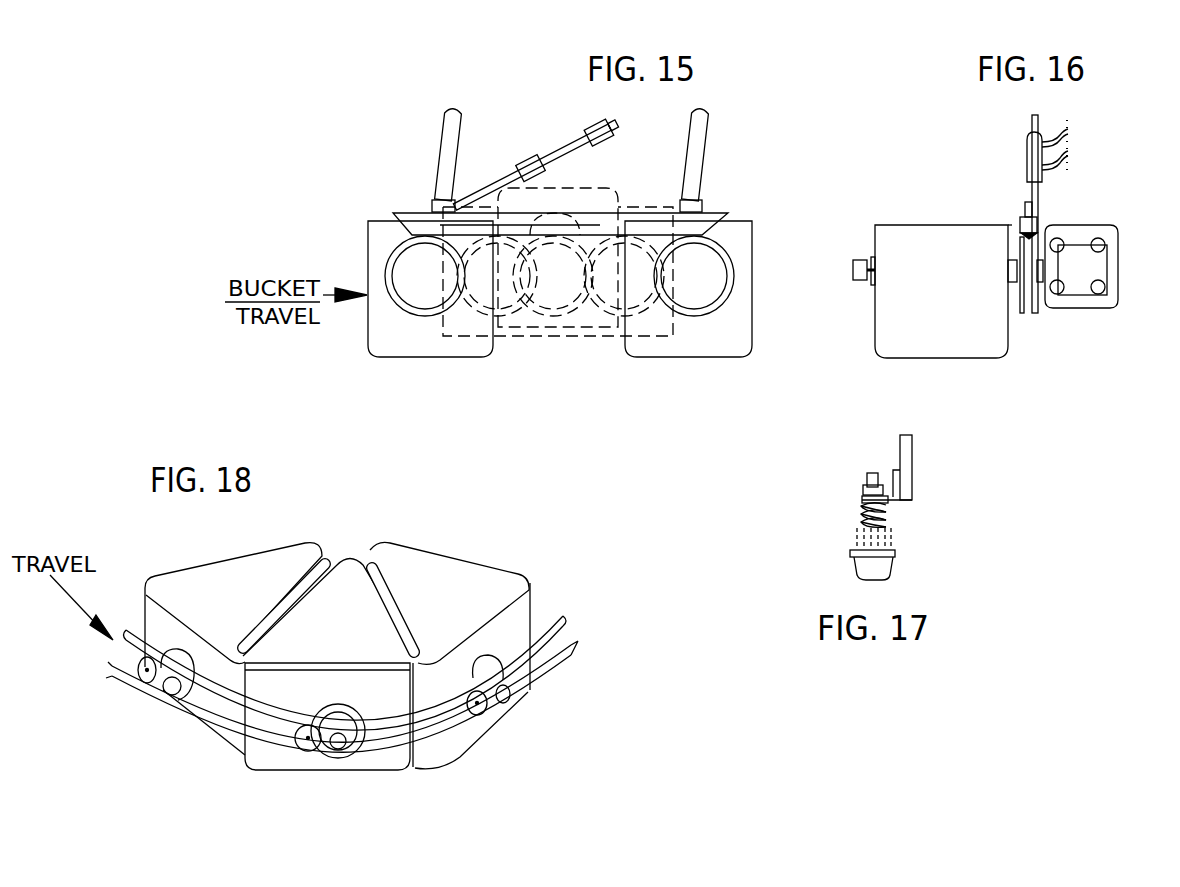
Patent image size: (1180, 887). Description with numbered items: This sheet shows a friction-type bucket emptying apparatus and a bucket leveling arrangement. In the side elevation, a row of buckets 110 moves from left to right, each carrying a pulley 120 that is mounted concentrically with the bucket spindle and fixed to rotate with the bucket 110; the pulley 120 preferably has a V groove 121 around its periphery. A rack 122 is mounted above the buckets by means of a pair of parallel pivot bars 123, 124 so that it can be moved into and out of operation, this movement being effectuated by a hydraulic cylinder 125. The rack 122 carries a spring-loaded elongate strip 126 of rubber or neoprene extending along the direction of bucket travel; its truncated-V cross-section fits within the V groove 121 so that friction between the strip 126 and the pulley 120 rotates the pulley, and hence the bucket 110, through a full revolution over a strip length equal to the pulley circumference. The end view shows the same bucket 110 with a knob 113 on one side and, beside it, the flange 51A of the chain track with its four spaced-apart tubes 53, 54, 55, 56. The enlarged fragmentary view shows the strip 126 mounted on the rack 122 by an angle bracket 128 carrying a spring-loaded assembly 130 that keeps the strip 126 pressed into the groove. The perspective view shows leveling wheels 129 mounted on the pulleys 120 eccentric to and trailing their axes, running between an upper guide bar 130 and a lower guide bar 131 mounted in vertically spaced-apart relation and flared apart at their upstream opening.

In FIG. 15, the bucket 110 is at (392, 345).
In FIG. 16, the bucket 110 is at (895, 232).
In FIG. 18, the bucket 110 is at (200, 576).
In FIG. 16, the roller / axle stub 113 is at (860, 262).
In FIG. 18, the roller / axle stub 113 is at (172, 700).
In FIG. 15, the pulley 120 is at (395, 262).
In FIG. 18, the pulley 120 is at (168, 655).
In FIG. 16, the V groove 121 is at (1024, 316).
In FIG. 15, the rack 122 is at (610, 214).
In FIG. 16, the rack 122 is at (1040, 197).
In FIG. 17, the rack 122 is at (906, 480).
In FIG. 15, the pivot bar 123 is at (440, 156).
In FIG. 15, the pivot bar 124 is at (706, 166).
In FIG. 15, the hydraulic cylinder 125 is at (566, 150).
In FIG. 15, the spring-loaded elongate strip 126 is at (657, 234).
In FIG. 16, the spring-loaded elongate strip 126 is at (1022, 233).
In FIG. 17, the spring-loaded elongate strip 126 is at (854, 562).
In FIG. 17, the angle bracket 128 is at (896, 502).
In FIG. 18, the leveling wheel 129 is at (147, 680).
In FIG. 16, the spring-loaded assembly / upper guide bar 130 is at (1022, 222).
In FIG. 17, the spring-loaded assembly / upper guide bar 130 is at (860, 510).
In FIG. 18, the spring-loaded assembly / upper guide bar 130 is at (605, 587).
In FIG. 18, the lower guide bar 131 is at (557, 658).
In FIG. 16, the flange 51A is at (1118, 232).
In FIG. 16, the tube 53 is at (1057, 238).
In FIG. 16, the tube 54 is at (1102, 245).
In FIG. 16, the tube 55 is at (1102, 287).
In FIG. 16, the tube 56 is at (1058, 292).